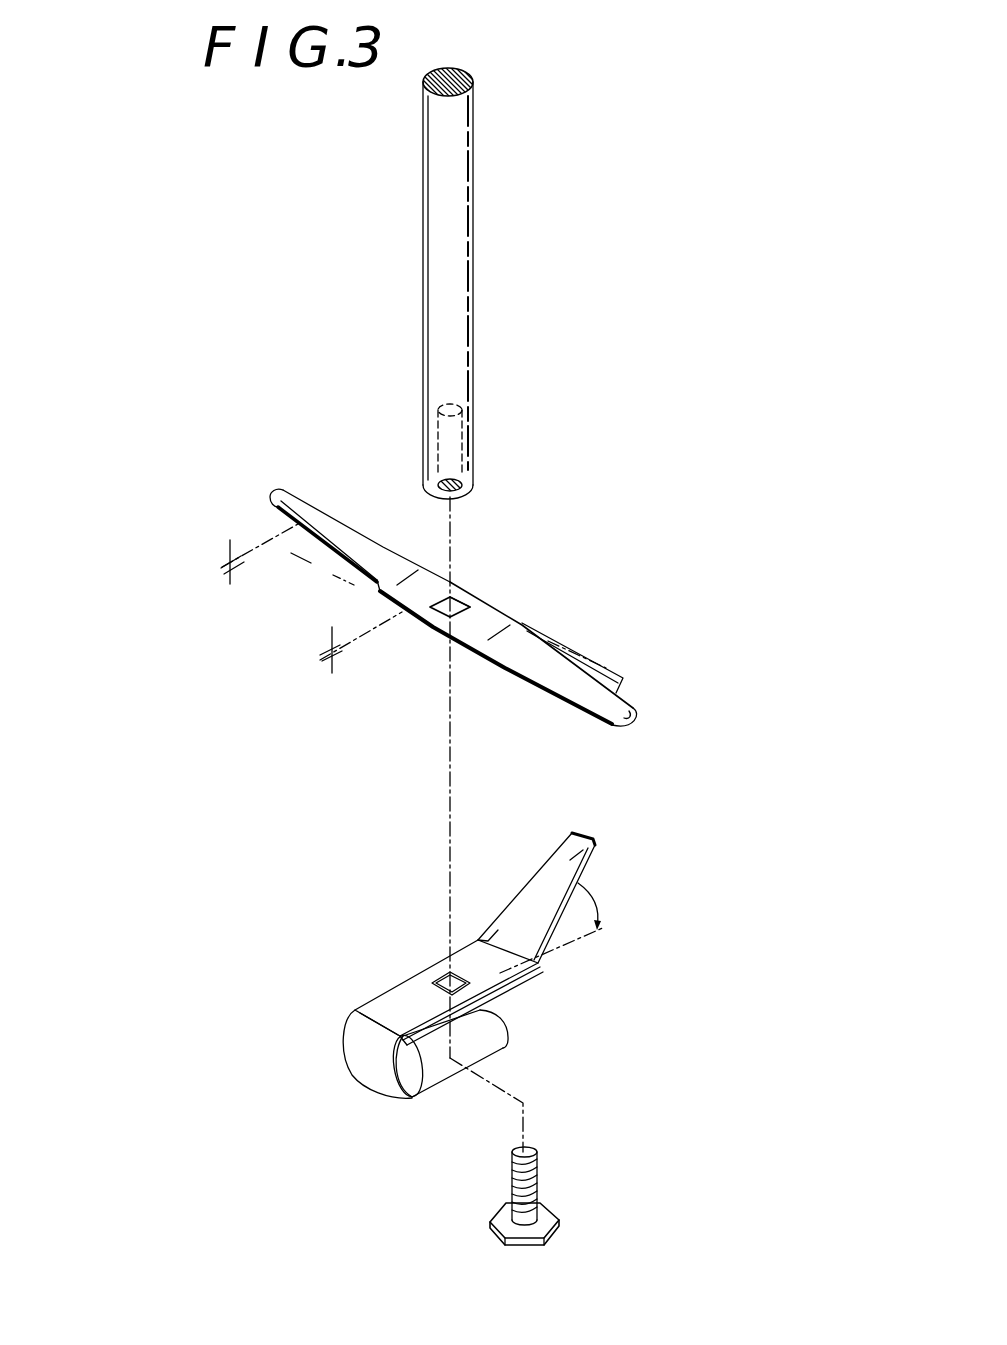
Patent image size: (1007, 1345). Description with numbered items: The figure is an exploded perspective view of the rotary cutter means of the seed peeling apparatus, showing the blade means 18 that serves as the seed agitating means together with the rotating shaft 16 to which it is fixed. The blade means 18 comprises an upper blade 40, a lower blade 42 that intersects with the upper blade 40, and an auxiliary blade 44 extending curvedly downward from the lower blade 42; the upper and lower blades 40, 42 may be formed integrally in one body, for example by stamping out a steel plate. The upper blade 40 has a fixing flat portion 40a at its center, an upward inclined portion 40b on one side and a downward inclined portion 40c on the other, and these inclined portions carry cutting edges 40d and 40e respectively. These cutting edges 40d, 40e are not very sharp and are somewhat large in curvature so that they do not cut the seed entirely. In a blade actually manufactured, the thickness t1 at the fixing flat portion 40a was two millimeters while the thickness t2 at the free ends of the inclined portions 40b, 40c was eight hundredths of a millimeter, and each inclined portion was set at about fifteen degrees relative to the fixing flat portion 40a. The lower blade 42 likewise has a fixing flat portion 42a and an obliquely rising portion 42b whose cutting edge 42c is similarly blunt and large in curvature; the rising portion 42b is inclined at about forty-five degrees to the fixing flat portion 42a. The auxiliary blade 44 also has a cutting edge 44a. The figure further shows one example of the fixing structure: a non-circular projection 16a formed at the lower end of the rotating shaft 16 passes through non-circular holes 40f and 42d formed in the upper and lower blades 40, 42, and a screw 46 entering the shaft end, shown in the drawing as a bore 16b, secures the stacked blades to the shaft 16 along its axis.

The rotating shaft 16 is at (452, 244).
The non-circular projection 16a is at (458, 492).
The shaft bore 16b is at (448, 440).
The blade means 18 is at (586, 562).
The upper blade 40 is at (480, 600).
The fixing flat portion 40a is at (438, 622).
The upward inclined portion 40b is at (352, 528).
The downward inclined portion 40c is at (570, 690).
The cutting edge 40d is at (343, 570).
The cutting edge 40e is at (567, 643).
The non-circular hole 40f is at (452, 597).
The lower blade 42 is at (420, 982).
The fixing flat portion 42a is at (380, 1010).
The obliquely rising portion 42b is at (595, 838).
The cutting edge 42c is at (523, 893).
The non-circular hole 42d is at (517, 973).
The auxiliary blade 44 is at (510, 1048).
The cutting edge 44a is at (428, 1102).
The screw 46 is at (535, 1190).
The thickness at fixing flat portion t1 is at (333, 653).
The thickness at free ends t2 is at (235, 573).